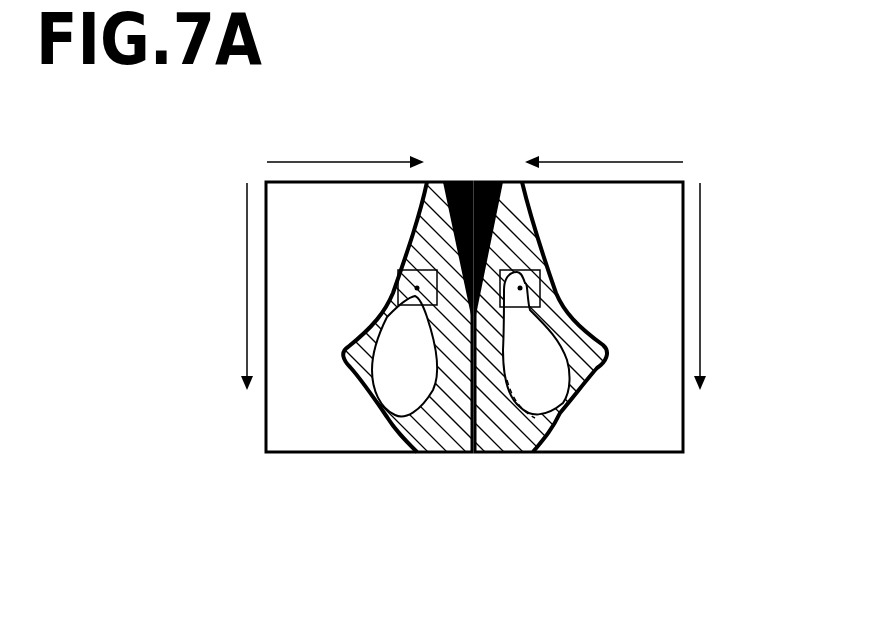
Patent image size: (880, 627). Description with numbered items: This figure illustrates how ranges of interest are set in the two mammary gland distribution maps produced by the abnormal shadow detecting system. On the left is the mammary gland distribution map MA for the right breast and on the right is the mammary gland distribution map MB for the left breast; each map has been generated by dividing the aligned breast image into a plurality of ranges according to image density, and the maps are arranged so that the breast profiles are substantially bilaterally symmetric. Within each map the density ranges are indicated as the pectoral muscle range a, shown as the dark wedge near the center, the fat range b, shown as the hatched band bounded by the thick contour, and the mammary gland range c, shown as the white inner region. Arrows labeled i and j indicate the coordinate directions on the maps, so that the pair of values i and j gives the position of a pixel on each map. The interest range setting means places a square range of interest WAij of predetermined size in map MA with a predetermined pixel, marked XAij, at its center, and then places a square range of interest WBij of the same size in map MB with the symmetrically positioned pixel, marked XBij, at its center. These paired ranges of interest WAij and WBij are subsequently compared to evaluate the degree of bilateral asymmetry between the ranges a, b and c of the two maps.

The mammary gland distribution map for the right breast MA is at (266, 182).
The mammary gland distribution map for the left breast MB is at (683, 182).
The pectoral muscle range a is at (460, 182).
The fat range b is at (420, 247).
The mammary gland range c is at (383, 389).
The pixel coordinate i is at (475, 148).
The pixel coordinate j is at (470, 286).
The range of interest in the right breast map WAij is at (411, 261).
The pixel of interest in first mask image XAij is at (409, 290).
The range of interest in the left breast map WBij is at (537, 259).
The pixel of interest in second mask image XBij is at (541, 290).